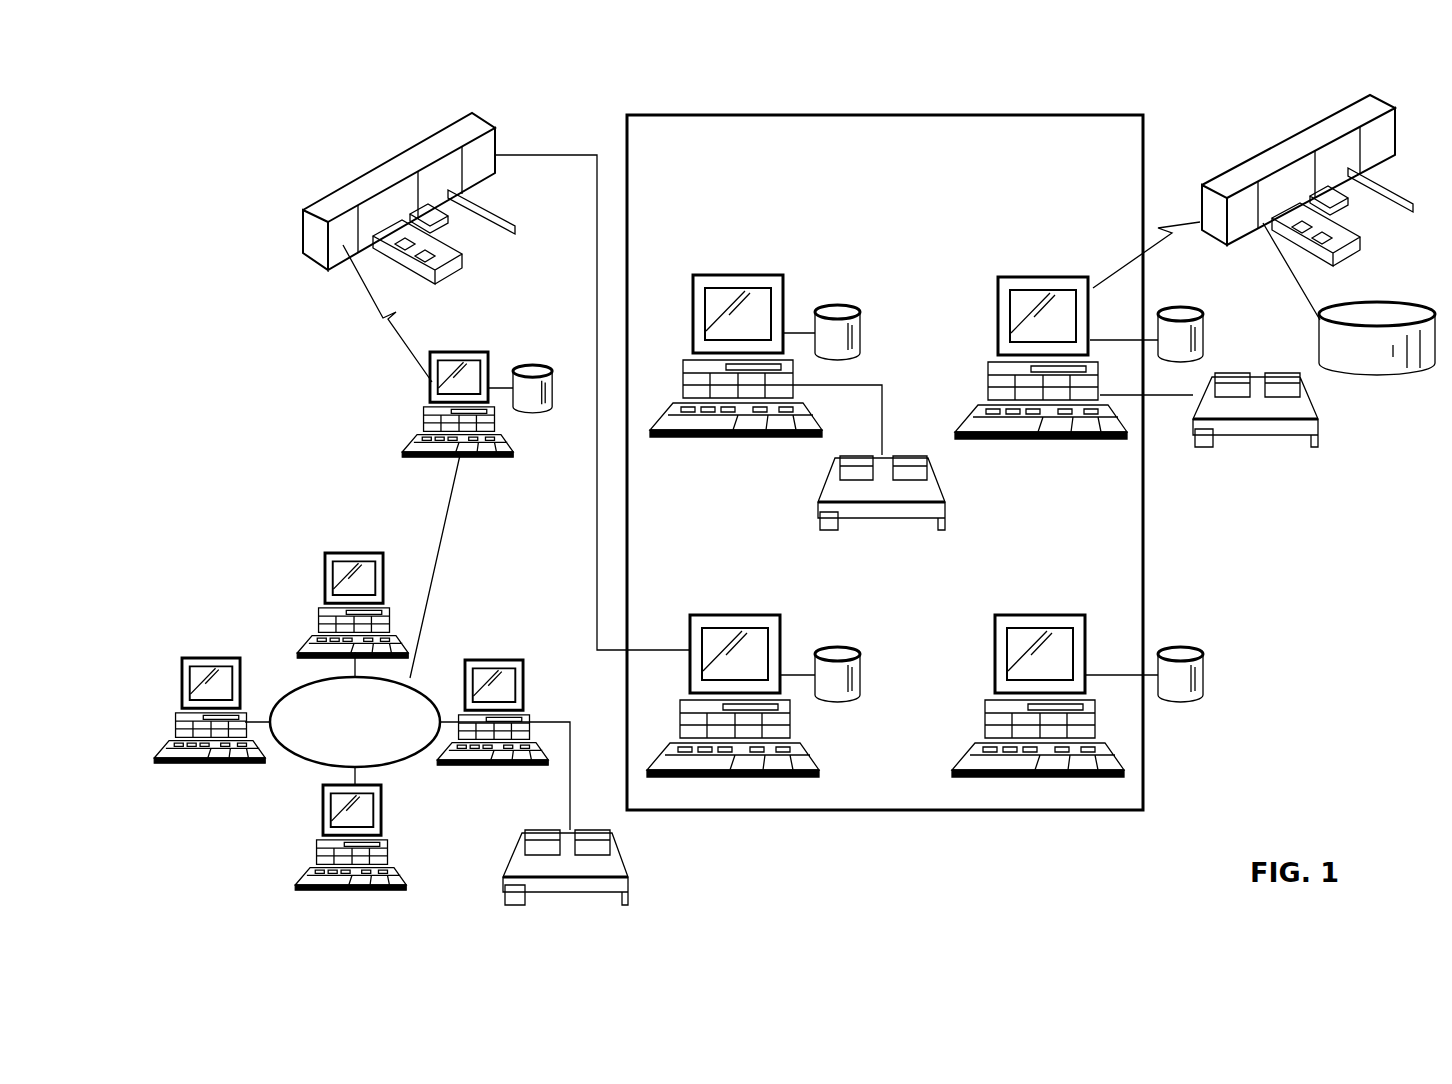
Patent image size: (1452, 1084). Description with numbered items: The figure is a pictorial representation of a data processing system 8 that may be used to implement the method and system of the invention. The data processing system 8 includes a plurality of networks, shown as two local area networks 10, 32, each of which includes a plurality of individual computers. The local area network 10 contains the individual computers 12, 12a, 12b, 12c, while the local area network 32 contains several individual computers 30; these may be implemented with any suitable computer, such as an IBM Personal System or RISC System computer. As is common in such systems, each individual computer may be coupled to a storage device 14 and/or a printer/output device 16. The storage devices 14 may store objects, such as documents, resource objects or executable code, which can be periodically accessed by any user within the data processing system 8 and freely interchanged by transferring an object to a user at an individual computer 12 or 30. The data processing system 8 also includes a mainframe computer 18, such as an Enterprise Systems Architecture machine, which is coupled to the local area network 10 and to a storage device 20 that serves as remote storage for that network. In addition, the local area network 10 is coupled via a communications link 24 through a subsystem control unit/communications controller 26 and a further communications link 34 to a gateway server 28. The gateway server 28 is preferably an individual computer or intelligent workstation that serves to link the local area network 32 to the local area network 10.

The data processing system 8 is at (624, 124).
The local area network 10 is at (771, 186).
The individual computer 12 is at (1020, 278).
The individual computer 12a is at (712, 277).
The individual computer 12b is at (712, 615).
The individual computer 12c is at (1020, 616).
The storage device 14 is at (860, 333).
The printer/output device 16 is at (933, 490).
The mainframe computer 18 is at (1222, 185).
The storage device 20 is at (1372, 360).
The communications link 24 is at (597, 298).
The subsystem control unit/communications controller 26 is at (372, 174).
The gateway server 28 is at (473, 352).
The individual computer 30 is at (325, 578).
The local area network 32 is at (311, 764).
The communications link 34 is at (398, 346).